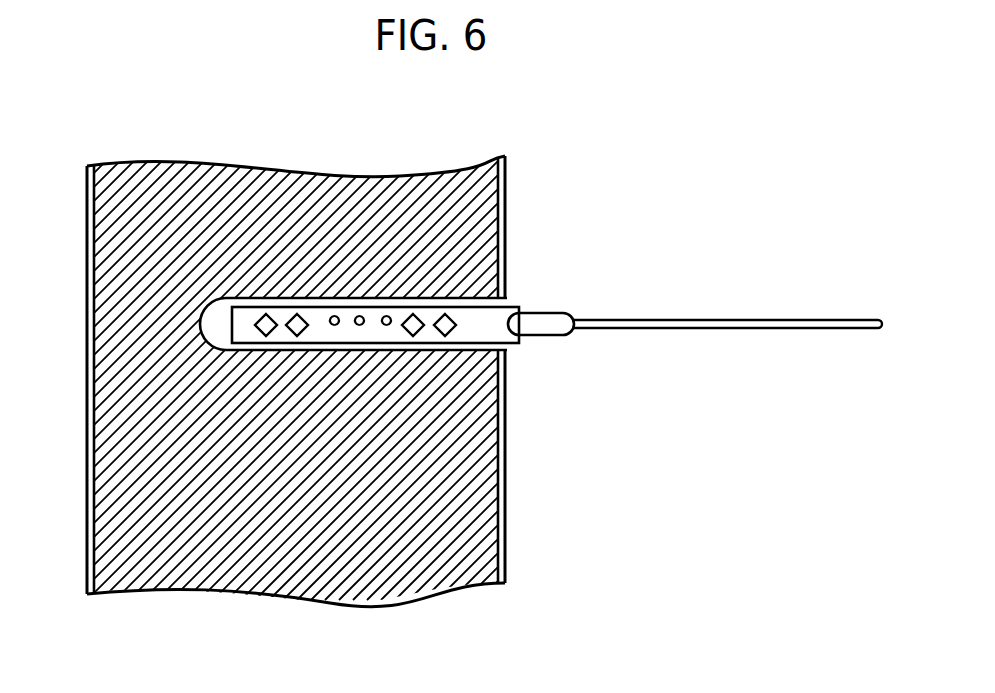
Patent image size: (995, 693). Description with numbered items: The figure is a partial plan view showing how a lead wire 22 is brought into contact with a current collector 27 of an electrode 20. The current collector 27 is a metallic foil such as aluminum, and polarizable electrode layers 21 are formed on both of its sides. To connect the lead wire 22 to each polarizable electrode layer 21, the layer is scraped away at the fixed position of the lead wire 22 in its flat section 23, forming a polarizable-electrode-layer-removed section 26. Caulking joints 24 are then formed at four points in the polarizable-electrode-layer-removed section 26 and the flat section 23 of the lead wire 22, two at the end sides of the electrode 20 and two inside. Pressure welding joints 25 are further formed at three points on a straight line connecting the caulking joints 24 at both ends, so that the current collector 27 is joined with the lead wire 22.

The electrode 20 is at (497, 303).
The polarizable electrode layer 21 is at (477, 548).
The lead wire 22 is at (803, 322).
The flat section 23 is at (482, 323).
The caulking joint 24 is at (445, 325).
The pressure welding joint 25 is at (355, 325).
The polarizable-electrode-layer-removed section 26 is at (210, 330).
The current collector 27 is at (500, 502).